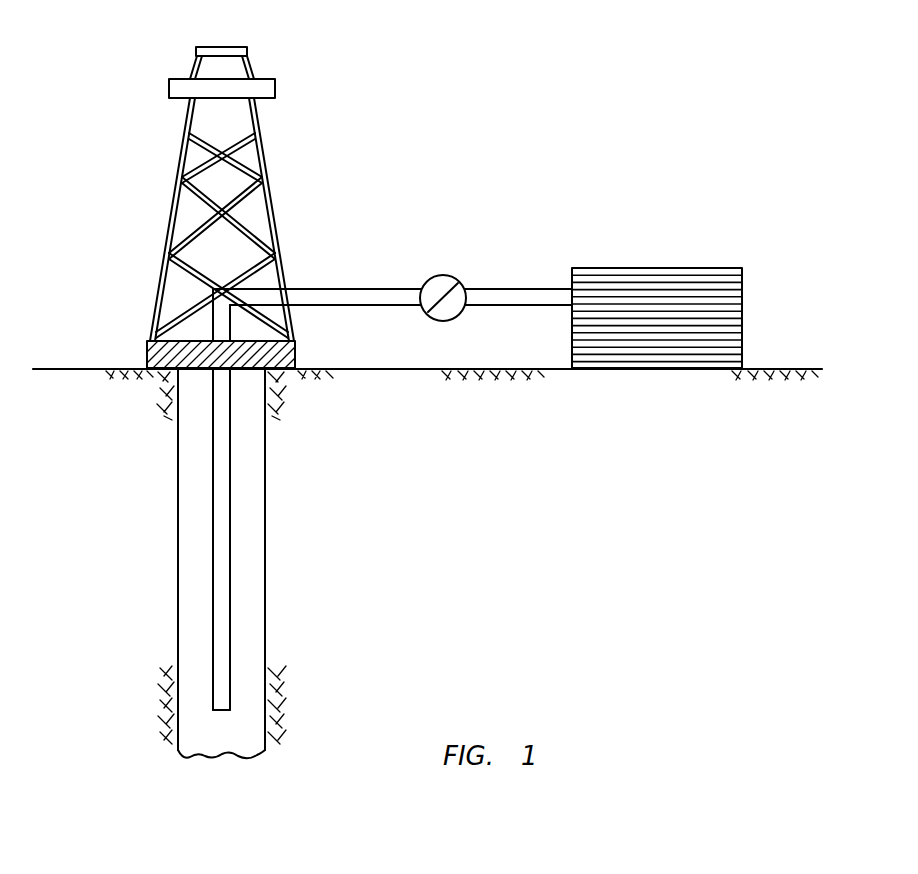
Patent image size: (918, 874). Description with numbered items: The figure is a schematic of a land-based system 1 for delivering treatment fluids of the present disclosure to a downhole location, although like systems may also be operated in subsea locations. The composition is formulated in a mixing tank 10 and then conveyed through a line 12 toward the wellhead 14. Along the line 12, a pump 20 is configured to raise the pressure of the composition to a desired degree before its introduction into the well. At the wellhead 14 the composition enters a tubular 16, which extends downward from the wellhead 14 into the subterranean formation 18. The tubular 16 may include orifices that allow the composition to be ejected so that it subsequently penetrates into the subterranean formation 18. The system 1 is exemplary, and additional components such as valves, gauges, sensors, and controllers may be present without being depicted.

The system 1 is at (115, 82).
The mixing tank 10 is at (730, 268).
The line 12 is at (355, 289).
The wellhead 14 is at (147, 355).
The tubular 16 is at (231, 485).
The subterranean formation 18 is at (104, 576).
The pump 20 is at (452, 276).